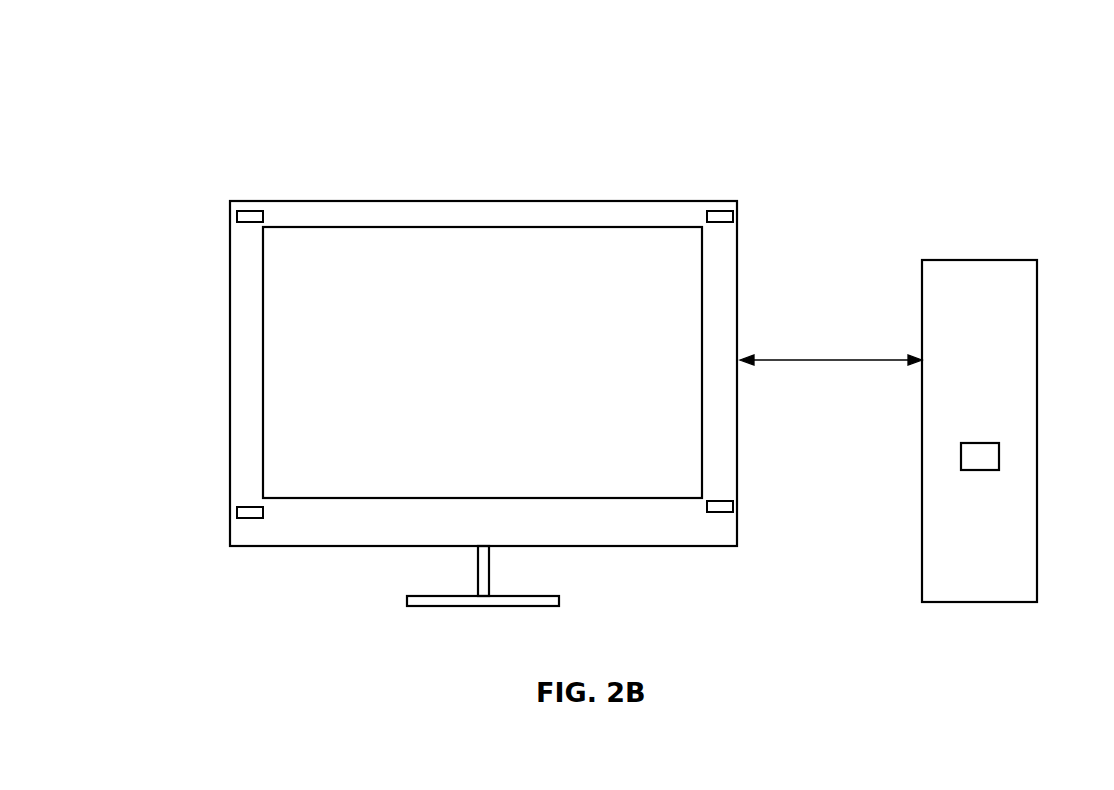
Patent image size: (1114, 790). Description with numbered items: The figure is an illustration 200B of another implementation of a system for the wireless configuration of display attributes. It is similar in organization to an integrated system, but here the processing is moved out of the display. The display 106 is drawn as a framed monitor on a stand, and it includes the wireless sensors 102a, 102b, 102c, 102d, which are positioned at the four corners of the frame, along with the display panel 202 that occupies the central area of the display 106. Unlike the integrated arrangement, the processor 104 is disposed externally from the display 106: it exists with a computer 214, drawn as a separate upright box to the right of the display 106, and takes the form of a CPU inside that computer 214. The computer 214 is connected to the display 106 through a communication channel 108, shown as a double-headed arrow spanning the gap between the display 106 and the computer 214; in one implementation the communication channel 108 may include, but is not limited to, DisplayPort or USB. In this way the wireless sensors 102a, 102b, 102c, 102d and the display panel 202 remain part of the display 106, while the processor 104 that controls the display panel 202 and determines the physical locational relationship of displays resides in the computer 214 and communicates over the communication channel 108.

The illustration 200B is at (1003, 88).
The display 106 is at (640, 200).
The display panel 202 is at (398, 246).
The wireless sensor 102a is at (248, 215).
The wireless sensor 102b is at (252, 508).
The wireless sensor 102c is at (722, 215).
The wireless sensor 102d is at (722, 503).
The communication channel 108 is at (808, 360).
The computer 214 is at (922, 537).
The processor 104 is at (998, 467).